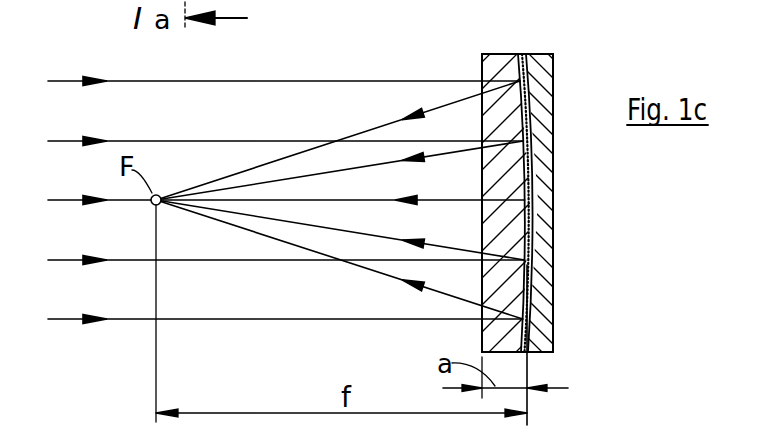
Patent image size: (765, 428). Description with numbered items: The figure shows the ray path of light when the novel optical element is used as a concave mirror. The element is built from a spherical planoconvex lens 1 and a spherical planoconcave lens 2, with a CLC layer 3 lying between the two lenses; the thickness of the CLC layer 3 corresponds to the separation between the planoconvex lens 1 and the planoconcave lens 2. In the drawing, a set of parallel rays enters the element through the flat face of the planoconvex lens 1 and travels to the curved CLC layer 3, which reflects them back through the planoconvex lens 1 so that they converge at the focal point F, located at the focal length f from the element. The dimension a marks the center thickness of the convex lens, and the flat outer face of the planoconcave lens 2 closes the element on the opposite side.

The spherical planoconvex lens 1 is at (490, 70).
The spherical planoconcave lens 2 is at (550, 72).
The CLC layer 3 is at (522, 65).